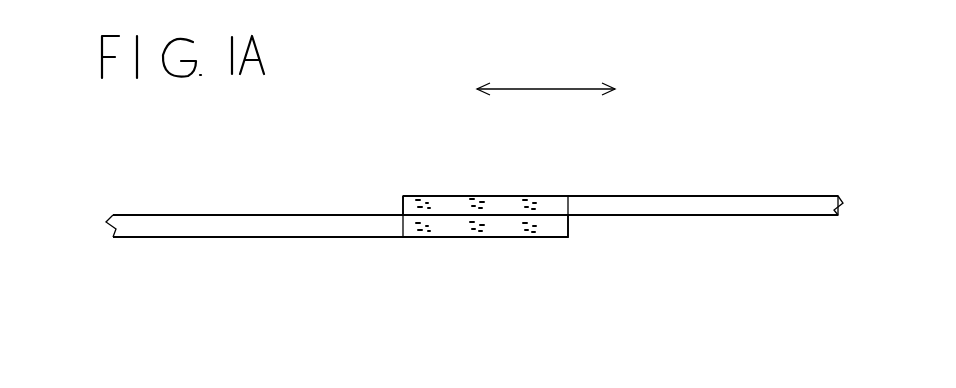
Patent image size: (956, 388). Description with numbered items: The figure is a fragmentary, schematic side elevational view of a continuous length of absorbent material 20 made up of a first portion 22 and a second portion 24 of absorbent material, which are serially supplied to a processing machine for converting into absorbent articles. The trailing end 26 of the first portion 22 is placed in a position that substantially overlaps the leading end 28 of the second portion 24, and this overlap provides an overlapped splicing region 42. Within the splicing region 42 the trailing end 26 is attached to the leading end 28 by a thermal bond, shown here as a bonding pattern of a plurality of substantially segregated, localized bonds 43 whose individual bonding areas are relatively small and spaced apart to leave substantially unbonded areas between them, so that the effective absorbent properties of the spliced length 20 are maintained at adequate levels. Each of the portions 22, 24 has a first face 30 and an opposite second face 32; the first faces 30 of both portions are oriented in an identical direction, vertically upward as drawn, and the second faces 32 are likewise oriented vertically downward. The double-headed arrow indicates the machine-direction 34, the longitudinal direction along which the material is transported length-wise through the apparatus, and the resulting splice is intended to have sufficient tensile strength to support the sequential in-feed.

The continuous length of absorbent material 20 is at (113, 270).
The first portion of absorbent material 22 is at (143, 203).
The second portion of absorbent material 24 is at (785, 189).
The trailing end 26 is at (385, 238).
The leading end 28 is at (405, 194).
The first face 30 is at (278, 213).
The second face 32 is at (245, 240).
The machine-direction 34 is at (568, 88).
The overlapped splicing region 42 is at (505, 243).
The localized bonds 43 is at (424, 230).